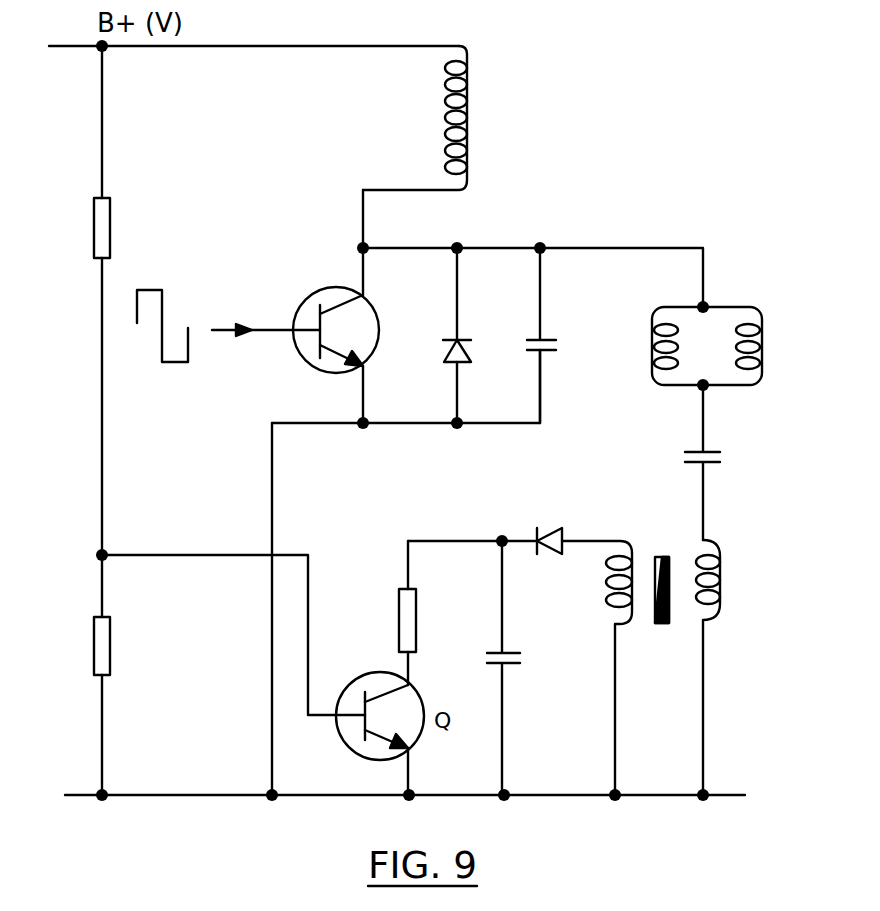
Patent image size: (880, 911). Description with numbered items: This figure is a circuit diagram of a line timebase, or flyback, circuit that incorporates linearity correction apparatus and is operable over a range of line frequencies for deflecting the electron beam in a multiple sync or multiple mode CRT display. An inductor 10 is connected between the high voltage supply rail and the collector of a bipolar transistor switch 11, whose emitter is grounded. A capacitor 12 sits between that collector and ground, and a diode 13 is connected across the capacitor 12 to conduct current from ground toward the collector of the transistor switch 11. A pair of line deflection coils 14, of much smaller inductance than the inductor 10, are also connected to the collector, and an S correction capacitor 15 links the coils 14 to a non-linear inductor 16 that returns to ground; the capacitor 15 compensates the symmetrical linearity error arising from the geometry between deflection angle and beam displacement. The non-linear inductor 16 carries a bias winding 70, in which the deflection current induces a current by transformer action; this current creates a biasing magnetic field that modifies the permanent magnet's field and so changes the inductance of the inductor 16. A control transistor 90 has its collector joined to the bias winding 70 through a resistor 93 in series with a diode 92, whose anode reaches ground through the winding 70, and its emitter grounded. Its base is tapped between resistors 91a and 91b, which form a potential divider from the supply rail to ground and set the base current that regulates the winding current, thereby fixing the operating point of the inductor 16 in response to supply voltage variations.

The inductor 10 is at (444, 113).
The bipolar transistor switch 11 is at (306, 292).
The capacitor 12 is at (553, 352).
The diode 13 is at (474, 362).
The line deflection coils 14 is at (737, 305).
The S correction capacitor 15 is at (722, 458).
The non-linear inductor 16 is at (704, 540).
The bias winding 70 is at (621, 541).
The control transistor 90 is at (364, 672).
The resistor 91a is at (94, 242).
The resistor 91b is at (94, 660).
The diode 92 is at (552, 528).
The resistor 93 is at (399, 604).